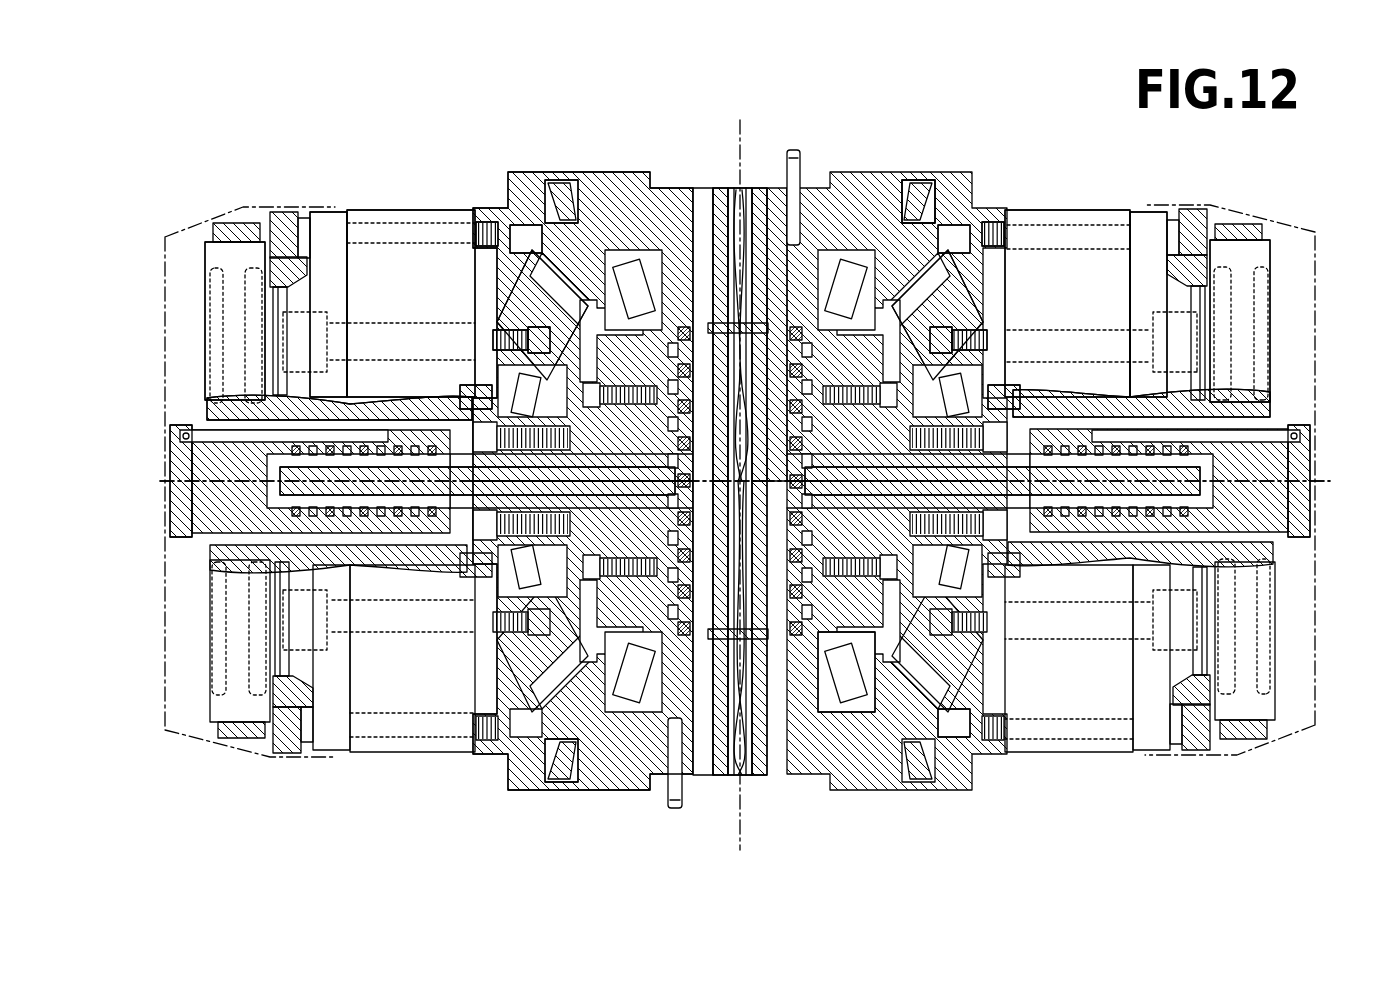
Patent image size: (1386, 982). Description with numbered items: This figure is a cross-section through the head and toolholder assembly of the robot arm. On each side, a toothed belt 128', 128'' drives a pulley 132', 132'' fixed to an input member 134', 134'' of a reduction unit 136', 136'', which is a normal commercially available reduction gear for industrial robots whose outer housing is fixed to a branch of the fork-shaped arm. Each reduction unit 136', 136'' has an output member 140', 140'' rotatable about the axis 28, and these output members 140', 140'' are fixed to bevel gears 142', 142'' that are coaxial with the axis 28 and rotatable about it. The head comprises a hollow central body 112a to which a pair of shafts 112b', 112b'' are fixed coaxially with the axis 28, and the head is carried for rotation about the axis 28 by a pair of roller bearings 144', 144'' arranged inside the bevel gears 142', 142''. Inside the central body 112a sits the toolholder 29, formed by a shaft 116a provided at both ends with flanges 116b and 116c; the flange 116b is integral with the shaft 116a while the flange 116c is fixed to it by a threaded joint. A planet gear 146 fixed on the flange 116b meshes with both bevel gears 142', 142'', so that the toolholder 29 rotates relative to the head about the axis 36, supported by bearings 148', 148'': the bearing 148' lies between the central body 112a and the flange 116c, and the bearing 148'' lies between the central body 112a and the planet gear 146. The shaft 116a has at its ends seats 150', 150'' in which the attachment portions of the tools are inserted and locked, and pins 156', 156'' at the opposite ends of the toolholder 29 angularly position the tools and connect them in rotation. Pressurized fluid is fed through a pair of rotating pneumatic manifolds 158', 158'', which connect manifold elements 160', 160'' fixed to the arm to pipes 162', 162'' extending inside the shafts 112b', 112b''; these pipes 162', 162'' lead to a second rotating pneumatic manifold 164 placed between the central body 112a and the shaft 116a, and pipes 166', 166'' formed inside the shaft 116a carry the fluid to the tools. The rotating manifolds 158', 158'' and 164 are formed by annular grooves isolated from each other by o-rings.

The axis 28 is at (1336, 486).
The toolholder 29 is at (745, 115).
The axis 36 is at (742, 142).
The central body 112a is at (900, 200).
The shaft 112b' is at (1057, 386).
The shaft 112b'' is at (428, 387).
The shaft 116a is at (716, 778).
The flange 116b is at (645, 790).
The flange 116c is at (646, 186).
The toothed belt 128' is at (1256, 282).
The toothed belt 128'' is at (242, 263).
The pulley 132' is at (1247, 304).
The pulley 132'' is at (251, 281).
The input member 134' is at (1191, 407).
The input member 134'' is at (286, 403).
The reduction unit 136' is at (1067, 264).
The reduction unit 136'' is at (411, 257).
The output member 140' is at (1005, 256).
The output member 140'' is at (472, 255).
The bevel gear 142' is at (952, 259).
The bevel gear 142'' is at (542, 258).
The roller bearing 144' is at (1011, 332).
The roller bearing 144'' is at (476, 323).
The planet gear 146 is at (862, 727).
The bearing 148' is at (740, 234).
The bearing 148'' is at (590, 787).
The seat 150' is at (788, 298).
The seat 150'' is at (779, 664).
The pin 156' is at (836, 180).
The pin 156'' is at (695, 801).
The rotating pneumatic manifold 158' is at (1238, 439).
The rotating pneumatic manifold 158'' is at (244, 450).
The manifold element 160' is at (1331, 510).
The manifold element 160'' is at (146, 500).
The pipe 162' is at (1087, 474).
The pipe 162'' is at (387, 496).
The second rotating pneumatic manifold 164 is at (752, 290).
The pipe 166' is at (714, 310).
The pipe 166'' is at (767, 654).